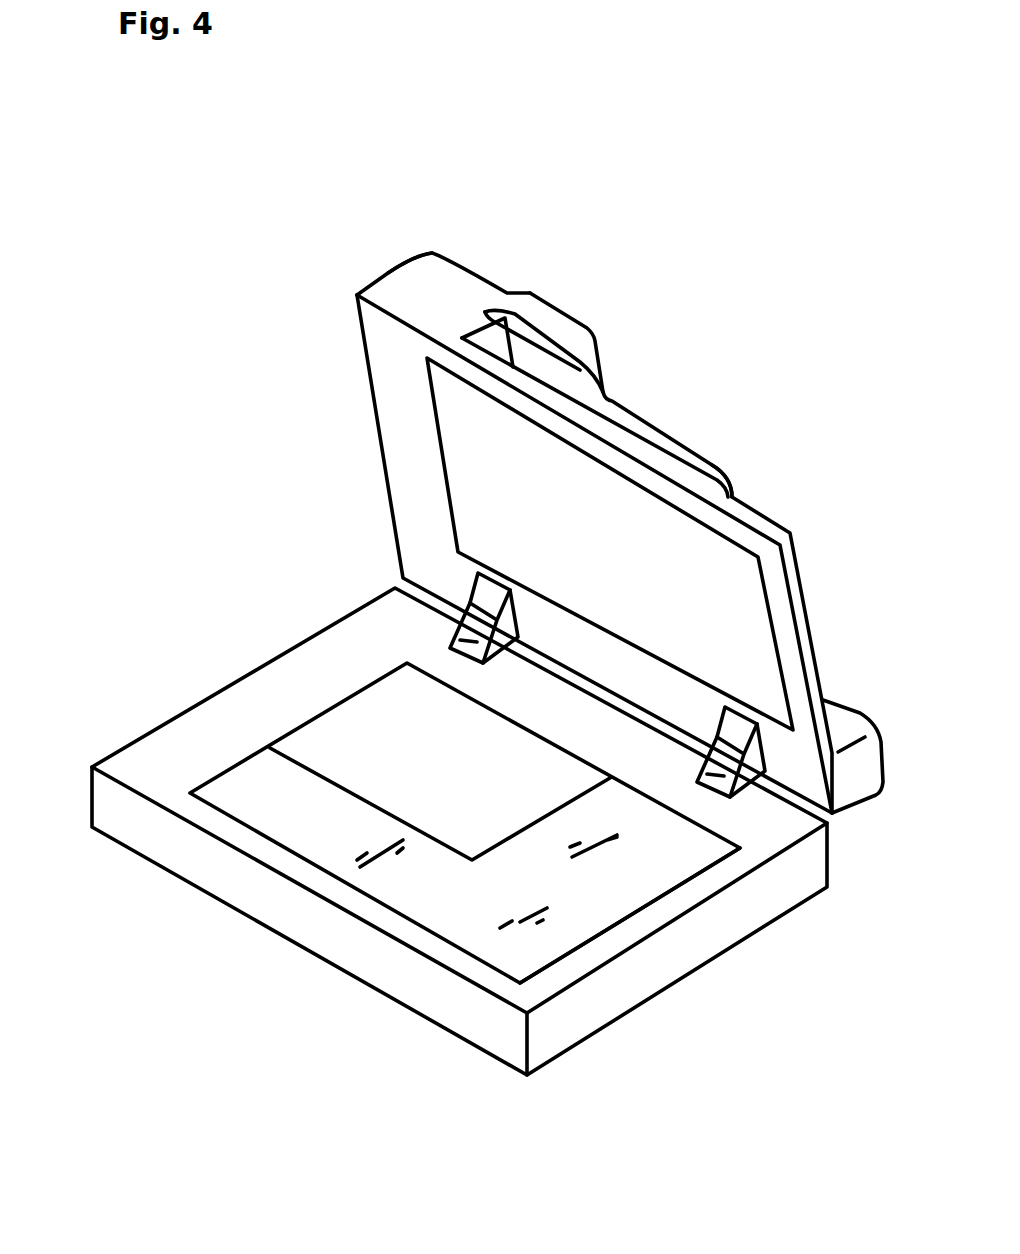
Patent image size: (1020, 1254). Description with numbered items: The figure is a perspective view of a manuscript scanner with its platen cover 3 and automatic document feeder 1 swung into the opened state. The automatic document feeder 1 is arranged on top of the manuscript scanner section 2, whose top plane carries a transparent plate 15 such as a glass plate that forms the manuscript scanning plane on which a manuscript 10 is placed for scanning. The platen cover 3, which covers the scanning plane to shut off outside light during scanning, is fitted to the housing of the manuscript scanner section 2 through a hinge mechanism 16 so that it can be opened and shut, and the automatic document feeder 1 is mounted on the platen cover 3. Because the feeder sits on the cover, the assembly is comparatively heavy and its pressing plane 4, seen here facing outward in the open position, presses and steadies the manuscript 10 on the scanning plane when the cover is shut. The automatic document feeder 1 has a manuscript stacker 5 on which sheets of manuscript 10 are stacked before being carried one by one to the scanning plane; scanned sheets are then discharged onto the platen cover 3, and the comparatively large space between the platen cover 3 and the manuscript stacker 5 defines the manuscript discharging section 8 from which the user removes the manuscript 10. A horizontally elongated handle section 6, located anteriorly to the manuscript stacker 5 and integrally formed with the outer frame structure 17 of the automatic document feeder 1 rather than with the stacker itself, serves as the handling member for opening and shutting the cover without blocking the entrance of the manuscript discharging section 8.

The automatic document feeder 1 is at (497, 272).
The manuscript scanner section 2 is at (227, 668).
The platen cover 3 is at (805, 635).
The pressing plane 4 is at (613, 530).
The manuscript stacker 5 is at (700, 456).
The handle section 6 is at (531, 305).
The manuscript discharging section 8 is at (537, 373).
The manuscript 10 is at (363, 763).
The transparent plate 15 is at (606, 903).
The hinge mechanism 16 is at (468, 645).
The outer frame structure 17 is at (423, 295).